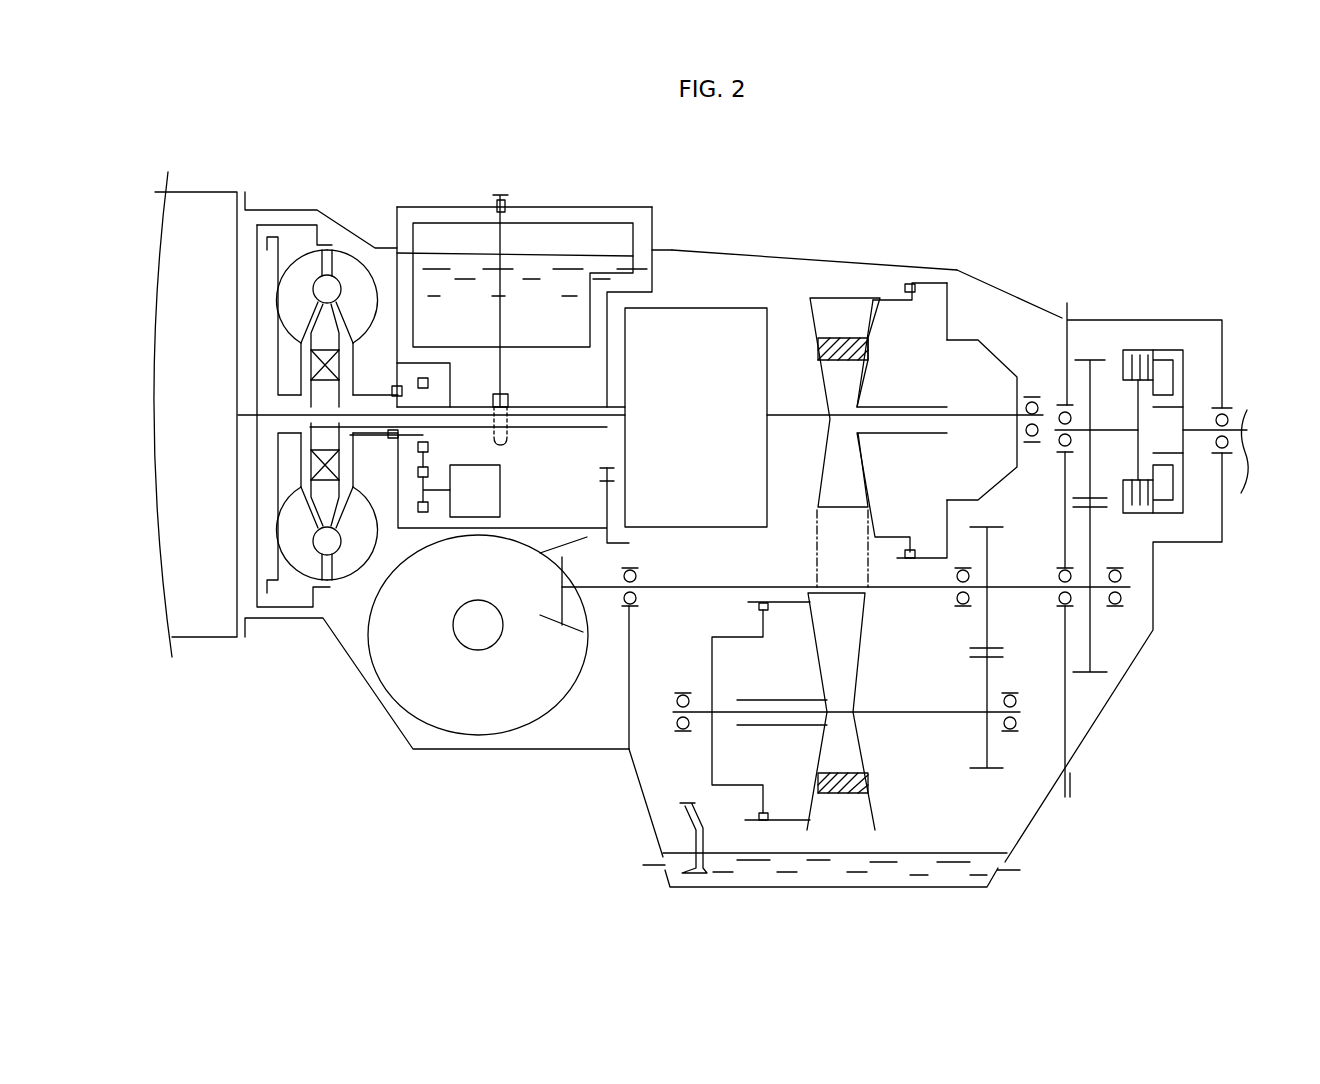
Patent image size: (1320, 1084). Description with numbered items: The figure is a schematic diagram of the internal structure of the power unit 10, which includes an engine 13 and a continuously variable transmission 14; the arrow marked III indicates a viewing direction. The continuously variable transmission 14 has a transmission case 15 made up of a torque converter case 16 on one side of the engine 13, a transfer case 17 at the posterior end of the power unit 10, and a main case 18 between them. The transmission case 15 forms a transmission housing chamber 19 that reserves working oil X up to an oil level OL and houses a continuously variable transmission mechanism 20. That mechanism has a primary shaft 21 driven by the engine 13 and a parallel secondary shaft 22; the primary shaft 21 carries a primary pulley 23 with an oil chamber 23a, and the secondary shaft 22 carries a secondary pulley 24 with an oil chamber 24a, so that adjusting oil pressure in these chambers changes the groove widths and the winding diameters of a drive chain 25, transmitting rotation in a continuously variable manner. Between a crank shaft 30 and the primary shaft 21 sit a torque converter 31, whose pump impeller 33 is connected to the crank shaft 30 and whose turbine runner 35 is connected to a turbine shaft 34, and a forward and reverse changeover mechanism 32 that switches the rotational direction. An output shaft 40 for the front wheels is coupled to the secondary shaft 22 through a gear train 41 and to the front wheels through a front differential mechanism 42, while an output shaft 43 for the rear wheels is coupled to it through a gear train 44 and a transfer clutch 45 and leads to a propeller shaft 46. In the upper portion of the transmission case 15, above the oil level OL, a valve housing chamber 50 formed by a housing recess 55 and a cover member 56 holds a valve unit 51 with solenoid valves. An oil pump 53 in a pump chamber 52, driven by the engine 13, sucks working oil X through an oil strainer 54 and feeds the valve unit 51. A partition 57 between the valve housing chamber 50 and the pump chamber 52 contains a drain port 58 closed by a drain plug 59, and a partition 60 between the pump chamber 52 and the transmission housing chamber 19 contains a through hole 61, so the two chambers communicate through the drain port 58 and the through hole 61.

The power unit 10 is at (1157, 222).
The engine 13 is at (205, 225).
The continuously variable transmission 14 is at (820, 250).
The transmission case 15 is at (1036, 294).
The torque converter case 16 is at (295, 620).
The transfer case 17 is at (1153, 600).
The main case 18 is at (973, 273).
The transmission housing chamber 19 is at (648, 683).
The continuously variable transmission mechanism 20 is at (984, 320).
The primary shaft 21 is at (805, 413).
The secondary shaft 22 is at (900, 712).
The primary pulley 23 is at (880, 290).
The oil chamber 23a is at (925, 352).
The secondary pulley 24 is at (888, 768).
The oil chamber 24a is at (748, 667).
The drive chain 25 is at (842, 790).
The crank shaft 30 is at (240, 412).
The torque converter 31 is at (331, 236).
The forward and reverse changeover mechanism 32 is at (708, 300).
The pump impeller 33 is at (355, 275).
The turbine shaft 34 is at (368, 425).
The turbine runner 35 is at (302, 290).
The output shaft for front wheels 40 is at (923, 593).
The gear train 41 is at (1000, 778).
The front differential mechanism 42 is at (414, 678).
The output shaft for rear wheels 43 is at (1193, 430).
The gear train 44 is at (1100, 352).
The transfer clutch 45 is at (1167, 340).
The propeller shaft 46 is at (1233, 466).
The valve housing chamber 50 is at (645, 205).
The valve unit 51 is at (592, 237).
The pump chamber 52 is at (407, 507).
The oil pump 53 is at (493, 507).
The oil strainer 54 is at (683, 820).
The housing recess 55 is at (402, 303).
The cover member 56 is at (553, 207).
The partition 57 is at (523, 405).
The drain port 58 is at (497, 437).
The drain plug 59 is at (490, 243).
The partition 60 is at (607, 448).
The through hole 61 is at (607, 480).
The working oil X is at (452, 243).
The oil level OL is at (663, 853).
The view direction III is at (262, 743).